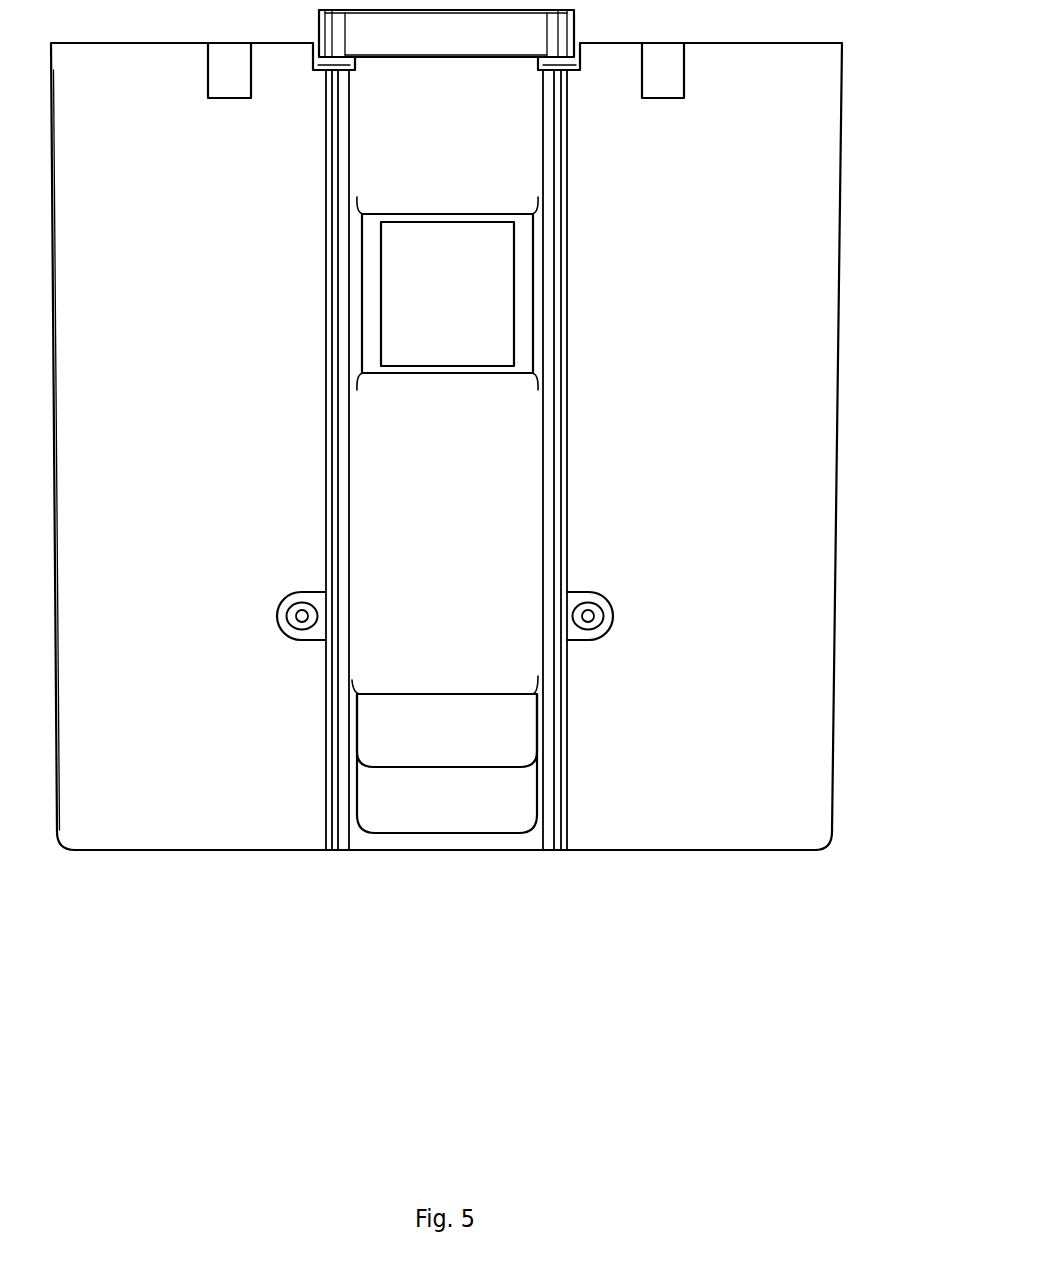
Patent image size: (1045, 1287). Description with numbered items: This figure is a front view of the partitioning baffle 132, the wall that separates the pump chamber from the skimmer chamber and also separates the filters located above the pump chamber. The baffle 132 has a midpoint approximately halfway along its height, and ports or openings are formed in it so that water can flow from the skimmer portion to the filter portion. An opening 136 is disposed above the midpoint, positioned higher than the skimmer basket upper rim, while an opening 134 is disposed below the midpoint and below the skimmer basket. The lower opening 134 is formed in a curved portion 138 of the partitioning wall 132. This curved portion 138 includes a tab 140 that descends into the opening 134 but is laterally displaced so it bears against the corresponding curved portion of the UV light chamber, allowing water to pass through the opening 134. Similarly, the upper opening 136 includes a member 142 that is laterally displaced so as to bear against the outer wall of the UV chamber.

The partitioning baffle 132 is at (699, 873).
The opening 134 is at (425, 807).
The opening 136 is at (525, 283).
The curved portion 138 is at (472, 524).
The tab 140 is at (465, 743).
The member 142 is at (460, 318).